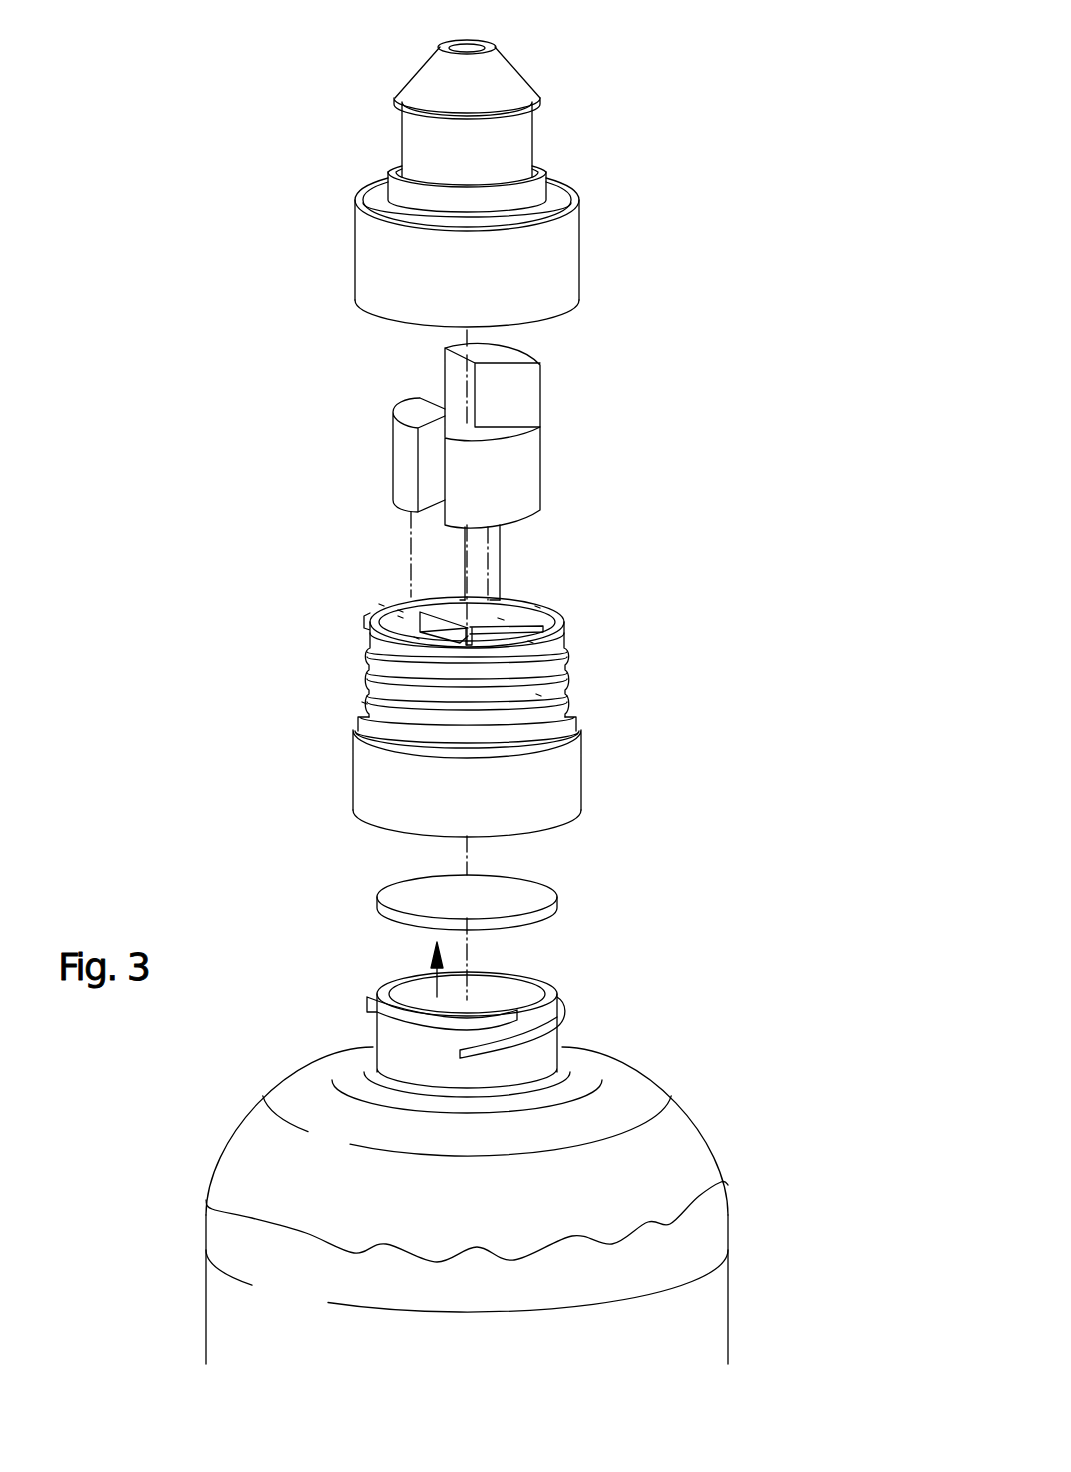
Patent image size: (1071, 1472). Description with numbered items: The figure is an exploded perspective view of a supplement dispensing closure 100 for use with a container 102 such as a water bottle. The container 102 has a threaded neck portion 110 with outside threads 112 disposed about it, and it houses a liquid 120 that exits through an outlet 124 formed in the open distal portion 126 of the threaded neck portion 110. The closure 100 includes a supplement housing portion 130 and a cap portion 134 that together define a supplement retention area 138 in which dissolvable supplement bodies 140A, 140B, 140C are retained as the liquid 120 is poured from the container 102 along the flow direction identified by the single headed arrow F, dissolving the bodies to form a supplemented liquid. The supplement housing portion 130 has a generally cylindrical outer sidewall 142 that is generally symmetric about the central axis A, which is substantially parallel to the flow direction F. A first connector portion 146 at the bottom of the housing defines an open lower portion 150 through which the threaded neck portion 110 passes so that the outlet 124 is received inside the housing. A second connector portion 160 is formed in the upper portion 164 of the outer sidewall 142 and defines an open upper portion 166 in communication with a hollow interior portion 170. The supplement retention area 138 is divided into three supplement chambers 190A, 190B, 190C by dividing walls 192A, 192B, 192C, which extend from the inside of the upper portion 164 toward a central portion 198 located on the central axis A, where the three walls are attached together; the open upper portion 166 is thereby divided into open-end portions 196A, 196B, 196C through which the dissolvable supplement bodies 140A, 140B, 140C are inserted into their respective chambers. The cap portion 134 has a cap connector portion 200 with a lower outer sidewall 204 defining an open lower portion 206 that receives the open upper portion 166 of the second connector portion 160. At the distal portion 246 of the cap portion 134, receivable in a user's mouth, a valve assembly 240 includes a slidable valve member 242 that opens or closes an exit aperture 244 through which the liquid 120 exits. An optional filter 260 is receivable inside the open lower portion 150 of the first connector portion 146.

The closure 100 is at (776, 63).
The container 102 is at (724, 1065).
The threaded neck portion 110 is at (532, 1060).
The outside threads 112 is at (568, 1008).
The liquid 120 is at (621, 1233).
The outlet 124 is at (500, 992).
The open distal portion 126 is at (552, 993).
The supplement housing portion 130 is at (739, 557).
The cap portion 134 is at (656, 178).
The supplement retention area 138 is at (522, 603).
The dissolvable supplement body 140A is at (515, 355).
The dissolvable supplement body 140B is at (391, 455).
The dissolvable supplement body 140C is at (528, 460).
The outer sidewall 142 is at (550, 612).
The first connector portion 146 is at (582, 767).
The open lower portion 150 is at (541, 834).
The second connector portion 160 is at (557, 697).
The upper portion 164 is at (405, 678).
The open upper portion 166 is at (466, 622).
The hollow interior portion 170 is at (480, 618).
The supplement chamber 190A is at (500, 620).
The supplement chamber 190B is at (538, 695).
The supplement chamber 190C is at (400, 617).
The dividing wall 192A is at (530, 642).
The dividing wall 192B is at (416, 638).
The dividing wall 192C is at (400, 612).
The open-end portion 196A is at (537, 606).
The open-end portion 196B is at (364, 703).
The open-end portion 196C is at (381, 605).
The central portion 198 is at (497, 612).
The cap connector portion 200 is at (580, 233).
The lower outer sidewall 204 is at (580, 268).
The open lower portion 206 is at (390, 319).
The valve assembly 240 is at (533, 128).
The slidable valve member 242 is at (531, 73).
The exit aperture 244 is at (478, 52).
The distal portion 246 is at (412, 68).
The filter 260 is at (572, 893).
The central axis A is at (462, 600).
The flow direction F is at (428, 985).